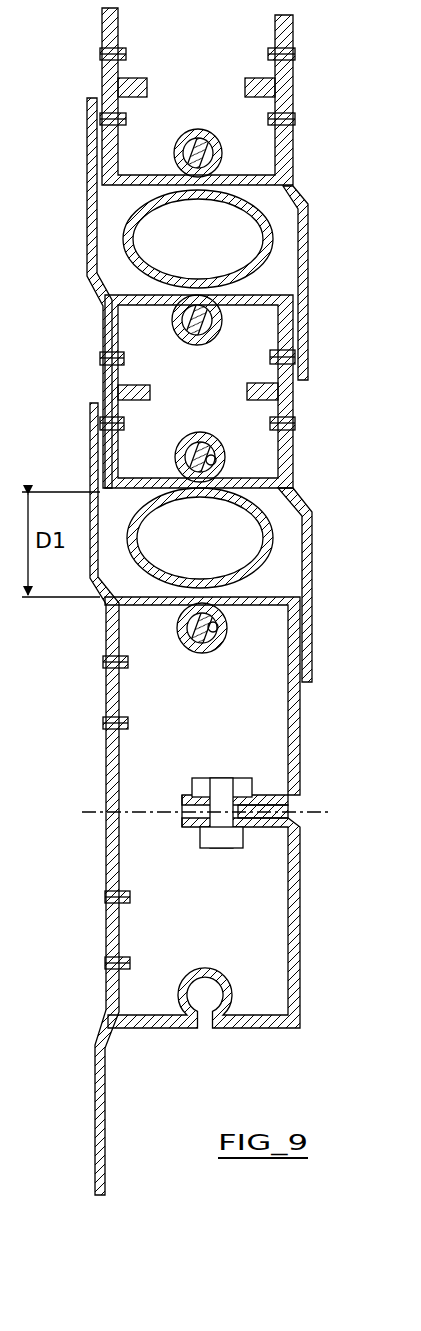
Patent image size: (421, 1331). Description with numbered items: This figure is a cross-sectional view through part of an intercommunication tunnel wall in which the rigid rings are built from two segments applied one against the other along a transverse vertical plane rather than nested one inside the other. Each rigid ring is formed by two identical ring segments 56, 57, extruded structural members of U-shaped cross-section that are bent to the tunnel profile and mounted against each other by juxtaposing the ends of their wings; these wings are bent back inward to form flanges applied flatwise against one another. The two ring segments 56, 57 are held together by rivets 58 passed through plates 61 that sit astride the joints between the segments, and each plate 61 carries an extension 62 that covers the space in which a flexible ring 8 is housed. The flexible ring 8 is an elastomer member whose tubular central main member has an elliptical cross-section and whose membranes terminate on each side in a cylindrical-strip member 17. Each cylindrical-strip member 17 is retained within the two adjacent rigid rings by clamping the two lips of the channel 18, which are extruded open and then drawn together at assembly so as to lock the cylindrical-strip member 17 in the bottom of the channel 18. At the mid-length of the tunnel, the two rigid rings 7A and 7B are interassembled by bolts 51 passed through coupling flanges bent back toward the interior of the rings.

The rigid ring 7A is at (300, 745).
The rigid ring 7B is at (302, 950).
The flexible ring 8 is at (272, 238).
The cylindrical-strip member 17 is at (199, 145).
The annular channel 18 is at (215, 462).
The bolt 51 is at (243, 838).
The ring segment 56 is at (104, 168).
The ring segment 57 is at (292, 316).
The rivet 58 is at (103, 52).
The plate 61 is at (105, 86).
The extension 62 is at (88, 232).